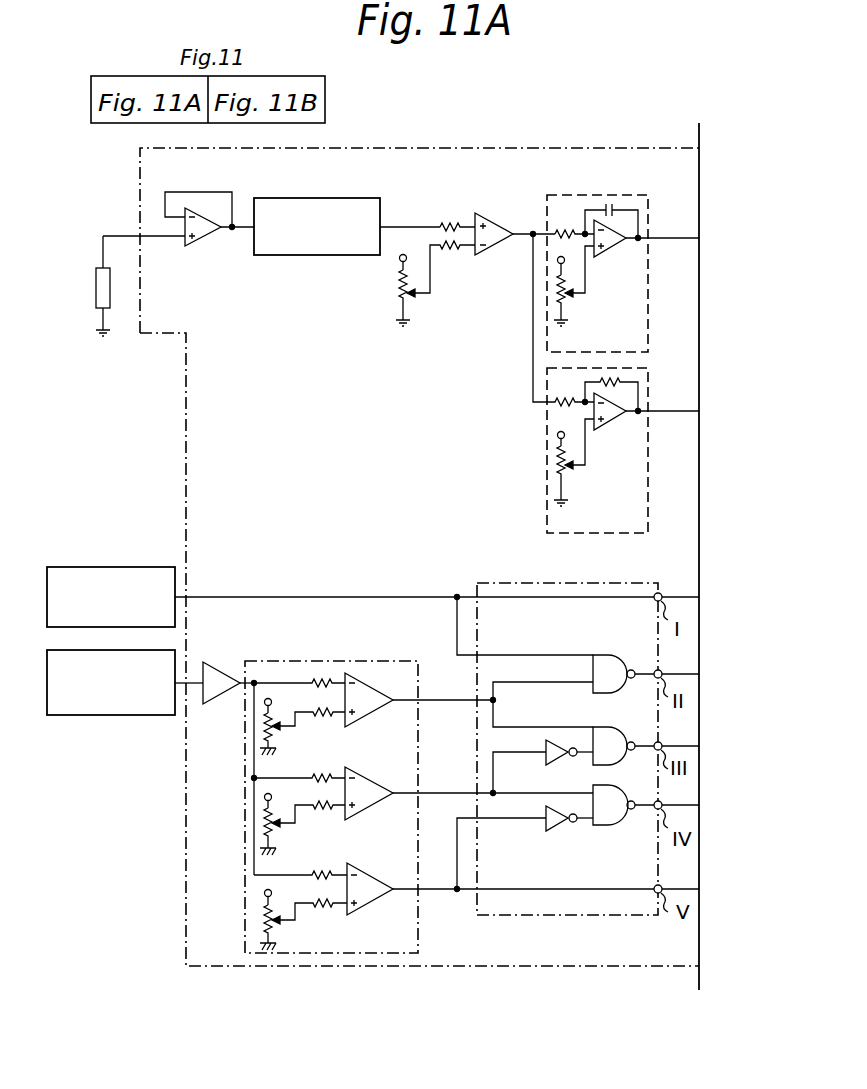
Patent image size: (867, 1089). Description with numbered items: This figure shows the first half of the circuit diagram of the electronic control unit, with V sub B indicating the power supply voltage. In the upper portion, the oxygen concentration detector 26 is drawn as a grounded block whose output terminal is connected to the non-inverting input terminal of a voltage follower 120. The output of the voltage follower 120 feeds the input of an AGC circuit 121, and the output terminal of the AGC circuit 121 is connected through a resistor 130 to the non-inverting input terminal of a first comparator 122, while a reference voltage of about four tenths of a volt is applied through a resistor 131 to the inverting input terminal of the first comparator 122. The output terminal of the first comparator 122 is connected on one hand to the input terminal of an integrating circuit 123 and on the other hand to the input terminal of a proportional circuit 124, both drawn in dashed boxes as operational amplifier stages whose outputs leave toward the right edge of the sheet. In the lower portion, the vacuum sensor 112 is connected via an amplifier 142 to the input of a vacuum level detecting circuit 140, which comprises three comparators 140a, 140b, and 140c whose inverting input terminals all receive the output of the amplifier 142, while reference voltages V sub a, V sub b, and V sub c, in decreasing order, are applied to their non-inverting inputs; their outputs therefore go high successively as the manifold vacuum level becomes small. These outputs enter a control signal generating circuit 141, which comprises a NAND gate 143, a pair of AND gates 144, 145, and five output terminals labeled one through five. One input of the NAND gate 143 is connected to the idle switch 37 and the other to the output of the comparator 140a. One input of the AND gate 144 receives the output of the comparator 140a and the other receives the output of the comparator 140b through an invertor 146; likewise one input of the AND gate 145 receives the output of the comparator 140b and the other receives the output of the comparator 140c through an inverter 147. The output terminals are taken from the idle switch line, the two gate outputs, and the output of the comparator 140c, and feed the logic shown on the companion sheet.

The oxygen concentration detector 26 is at (96, 296).
The voltage follower 120 is at (205, 240).
The AGC circuit 121 is at (316, 256).
The resistor 130 is at (449, 222).
The resistor 131 is at (452, 262).
The first comparator 122 is at (505, 219).
The integrating circuit 123 is at (608, 191).
The proportional circuit 124 is at (604, 545).
The idle switch 37 is at (110, 572).
The vacuum sensor 112 is at (104, 716).
The amplifier 142 is at (226, 669).
The vacuum level detecting circuit 140 is at (368, 652).
The comparator 140a is at (372, 716).
The comparator 140b is at (372, 809).
The comparator 140c is at (372, 905).
The control signal generating circuit 141 is at (493, 570).
The NAND gate 143 is at (612, 657).
The AND gate 144 is at (604, 738).
The AND gate 145 is at (606, 792).
The invertor 146 is at (550, 762).
The inverter 147 is at (556, 831).